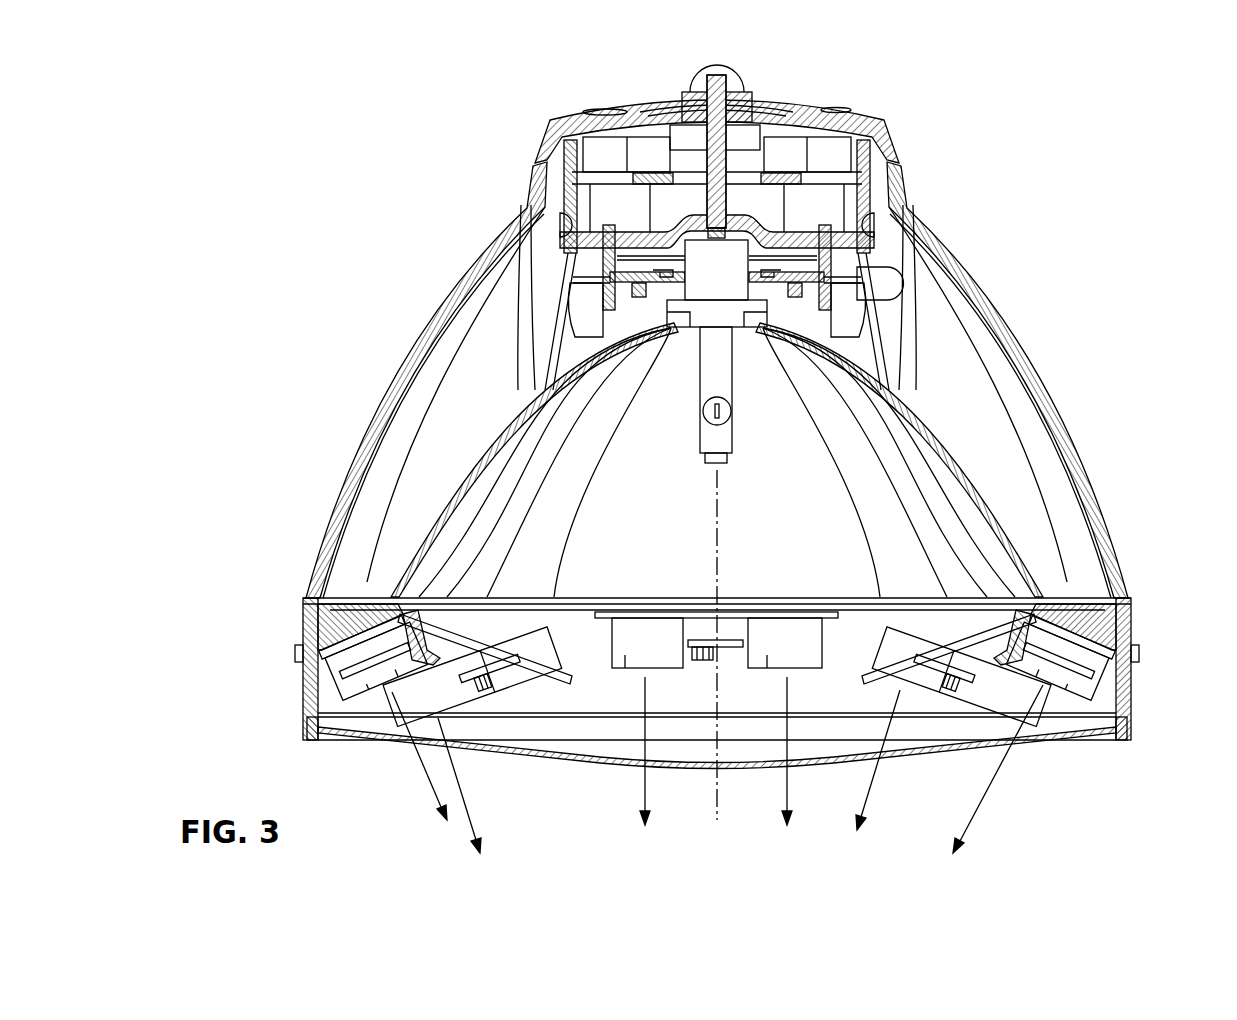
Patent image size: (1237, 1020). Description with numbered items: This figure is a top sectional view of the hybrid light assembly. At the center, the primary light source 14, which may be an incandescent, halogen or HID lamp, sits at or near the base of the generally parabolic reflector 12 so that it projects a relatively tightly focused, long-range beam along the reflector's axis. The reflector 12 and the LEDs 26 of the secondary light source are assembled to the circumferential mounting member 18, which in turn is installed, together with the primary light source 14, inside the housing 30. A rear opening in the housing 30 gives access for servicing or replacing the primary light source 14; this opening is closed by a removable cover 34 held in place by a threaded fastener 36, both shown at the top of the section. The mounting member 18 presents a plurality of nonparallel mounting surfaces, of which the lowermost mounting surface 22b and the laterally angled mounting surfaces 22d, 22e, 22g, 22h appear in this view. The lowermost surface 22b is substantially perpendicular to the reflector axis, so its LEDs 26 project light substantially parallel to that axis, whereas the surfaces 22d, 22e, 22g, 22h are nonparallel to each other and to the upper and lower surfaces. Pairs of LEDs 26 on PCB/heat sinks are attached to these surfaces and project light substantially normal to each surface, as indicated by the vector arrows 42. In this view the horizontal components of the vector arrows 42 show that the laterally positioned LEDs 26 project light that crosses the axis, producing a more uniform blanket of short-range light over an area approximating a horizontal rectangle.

The reflector 12 is at (933, 440).
The primary light source 14 is at (745, 436).
The mounting member 18 is at (1127, 705).
The lowermost mounting surface 22b is at (783, 615).
The mounting surface 22d is at (1112, 666).
The mounting surface 22e is at (917, 625).
The mounting surface 22g is at (325, 680).
The mounting surface 22h is at (530, 622).
The LEDs 26 is at (378, 690).
The housing 30 is at (980, 300).
The removable cover 34 is at (570, 117).
The threaded fastener 36 is at (726, 67).
The vector arrows 42 is at (993, 800).